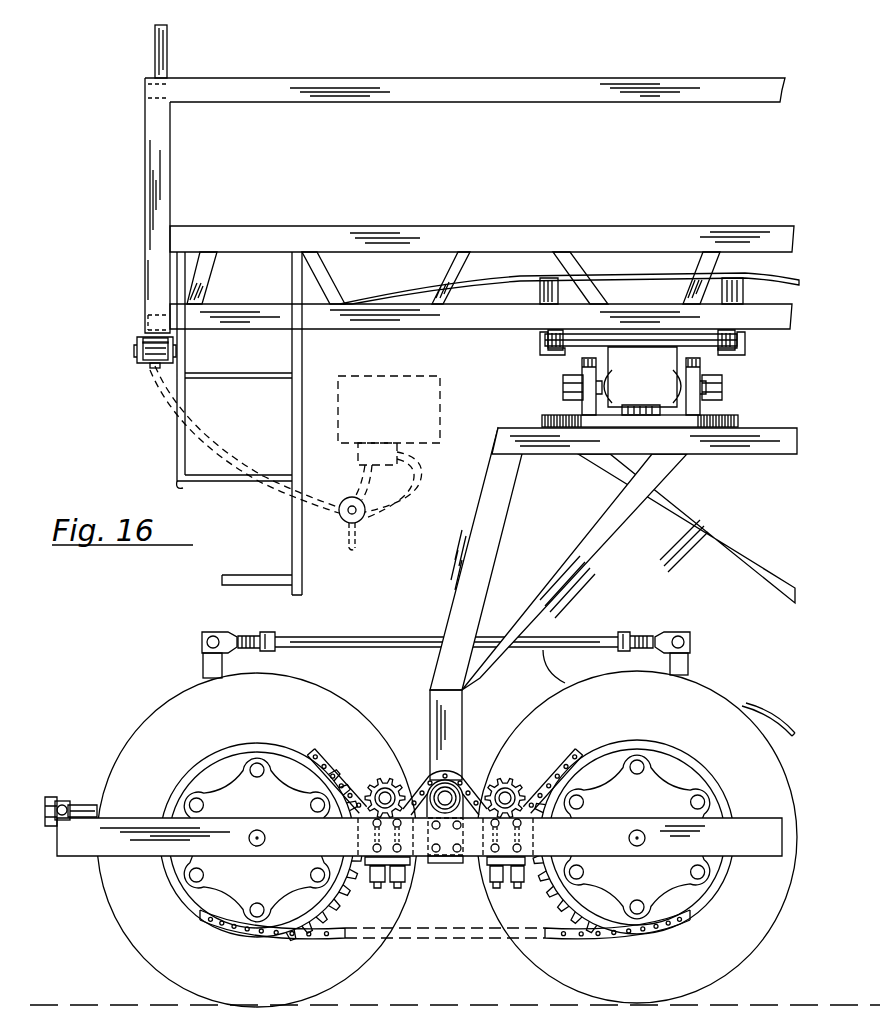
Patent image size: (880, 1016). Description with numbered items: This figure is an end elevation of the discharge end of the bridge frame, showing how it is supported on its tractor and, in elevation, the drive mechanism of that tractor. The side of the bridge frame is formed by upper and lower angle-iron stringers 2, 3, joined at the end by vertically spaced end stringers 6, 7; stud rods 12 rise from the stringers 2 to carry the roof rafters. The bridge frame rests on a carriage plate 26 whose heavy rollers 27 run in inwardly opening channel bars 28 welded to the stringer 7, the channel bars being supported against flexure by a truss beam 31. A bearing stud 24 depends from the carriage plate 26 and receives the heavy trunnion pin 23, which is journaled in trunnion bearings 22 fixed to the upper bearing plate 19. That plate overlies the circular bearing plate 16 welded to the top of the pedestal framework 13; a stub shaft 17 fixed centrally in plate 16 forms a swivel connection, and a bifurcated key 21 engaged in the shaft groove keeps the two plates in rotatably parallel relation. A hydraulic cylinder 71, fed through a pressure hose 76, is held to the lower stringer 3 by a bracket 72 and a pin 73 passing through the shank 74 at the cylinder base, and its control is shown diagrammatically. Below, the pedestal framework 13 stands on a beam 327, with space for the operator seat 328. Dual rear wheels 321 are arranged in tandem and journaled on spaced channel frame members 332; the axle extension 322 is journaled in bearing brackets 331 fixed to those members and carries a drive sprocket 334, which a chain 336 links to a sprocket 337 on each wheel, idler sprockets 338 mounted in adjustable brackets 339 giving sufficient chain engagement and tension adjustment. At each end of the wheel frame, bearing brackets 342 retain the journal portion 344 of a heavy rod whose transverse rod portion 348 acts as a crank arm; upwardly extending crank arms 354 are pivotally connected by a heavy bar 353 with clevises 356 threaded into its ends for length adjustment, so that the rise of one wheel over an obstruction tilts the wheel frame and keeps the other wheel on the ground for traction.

The stud rod 12 is at (170, 54).
The angle-iron stringer 2 is at (157, 205).
The angle-iron stringer 3 is at (152, 312).
The end stringer 6 is at (465, 92).
The end stringer 7 is at (325, 322).
The truss beam 31 is at (647, 277).
The heavy roller 27 is at (555, 336).
The carriage plate 26 is at (638, 341).
The channel bar 28 is at (542, 344).
The bearing stud 24 is at (645, 374).
The trunnion bearing 22 is at (582, 365).
The stub shaft 17 is at (654, 391).
The trunnion pin 23 is at (724, 388).
The bearing plate 19 is at (548, 415).
The bifurcated key 21 is at (632, 418).
The bearing plate 16 is at (738, 422).
The pedestal type framework 13 is at (768, 456).
The shank 74 is at (148, 344).
The pin 73 is at (140, 352).
The bracket 72 is at (137, 363).
The hydraulic cylinder 71 is at (157, 368).
The pressure hose 76 is at (172, 405).
The clevis 356 is at (233, 632).
The crank arm 354 is at (204, 665).
The heavy bar 353 is at (397, 648).
The dual rear wheel 321 is at (260, 715).
The seat 328 is at (768, 720).
The beam 327 is at (463, 718).
The bearing bracket 342 is at (68, 800).
The rod portion 348 is at (96, 806).
The journal portion 344 is at (46, 812).
The chain 336 is at (343, 780).
The idler sprocket 338 is at (390, 778).
The axle extension 322 is at (447, 790).
The channel frame member 332 is at (316, 843).
The drive sprocket 334 is at (475, 820).
The bracket 339 is at (366, 868).
The bearing bracket 331 is at (420, 840).
The sprocket 337 is at (332, 898).